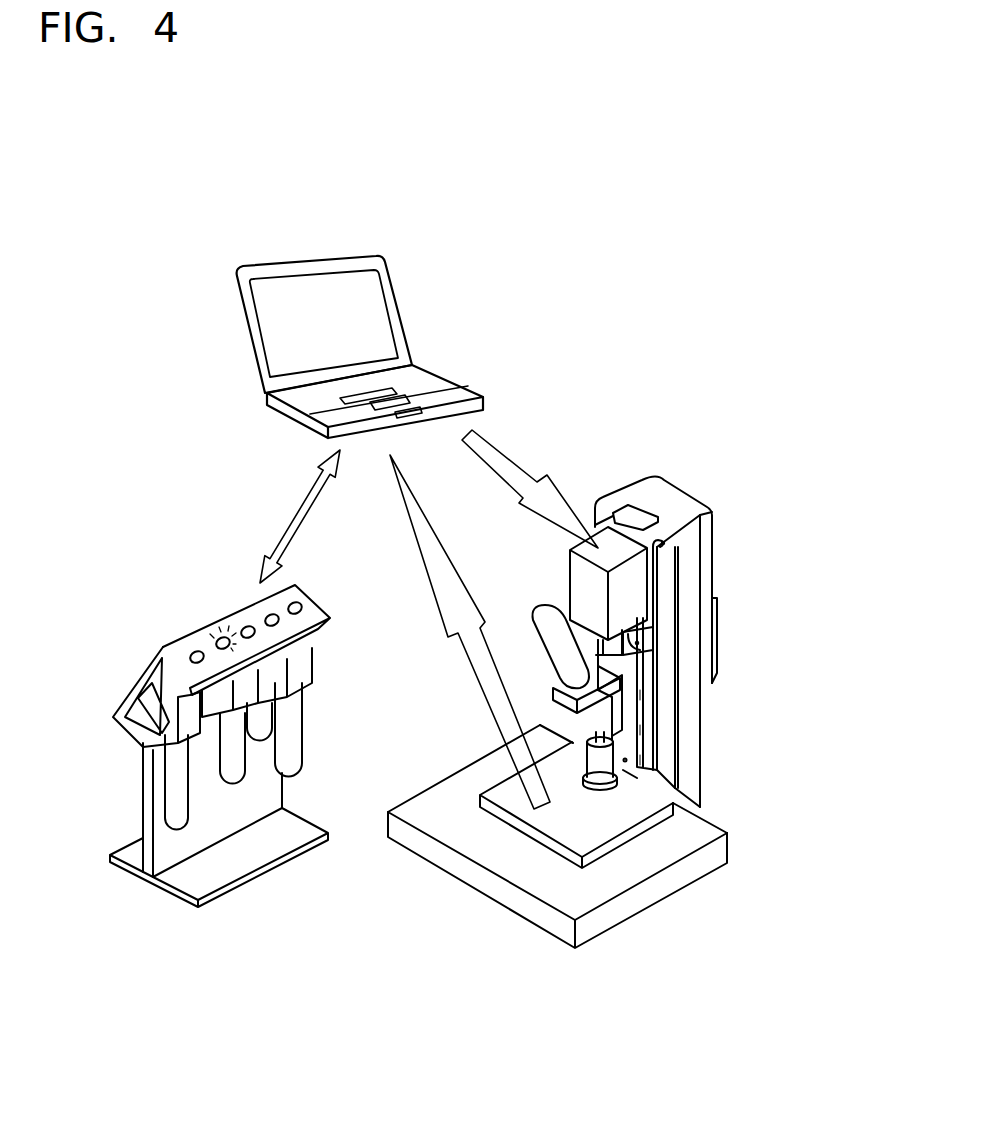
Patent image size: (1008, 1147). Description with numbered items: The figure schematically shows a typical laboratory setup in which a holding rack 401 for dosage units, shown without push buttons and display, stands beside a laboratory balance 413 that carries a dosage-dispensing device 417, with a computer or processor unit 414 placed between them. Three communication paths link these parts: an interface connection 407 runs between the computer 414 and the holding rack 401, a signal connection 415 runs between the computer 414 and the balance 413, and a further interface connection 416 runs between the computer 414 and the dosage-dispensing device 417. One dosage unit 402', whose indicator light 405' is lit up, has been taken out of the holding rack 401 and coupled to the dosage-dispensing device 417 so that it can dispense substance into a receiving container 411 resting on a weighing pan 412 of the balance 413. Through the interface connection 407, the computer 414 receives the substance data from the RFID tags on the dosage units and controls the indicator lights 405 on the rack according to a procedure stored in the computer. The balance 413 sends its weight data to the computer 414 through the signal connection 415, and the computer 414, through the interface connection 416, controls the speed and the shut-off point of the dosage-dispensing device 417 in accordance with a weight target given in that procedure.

The holding rack 401 is at (206, 805).
The dosage unit 402' is at (708, 671).
The indicator lights 405 is at (181, 597).
The indicator light 405' is at (144, 621).
The interface connection 407 is at (300, 518).
The receiving container 411 is at (627, 768).
The weighing pan 412 is at (613, 805).
The laboratory balance 413 is at (723, 708).
The computer 414 is at (315, 333).
The signal connection 415 is at (490, 688).
The interface connection 416 is at (524, 484).
The dosage-dispensing device 417 is at (620, 592).